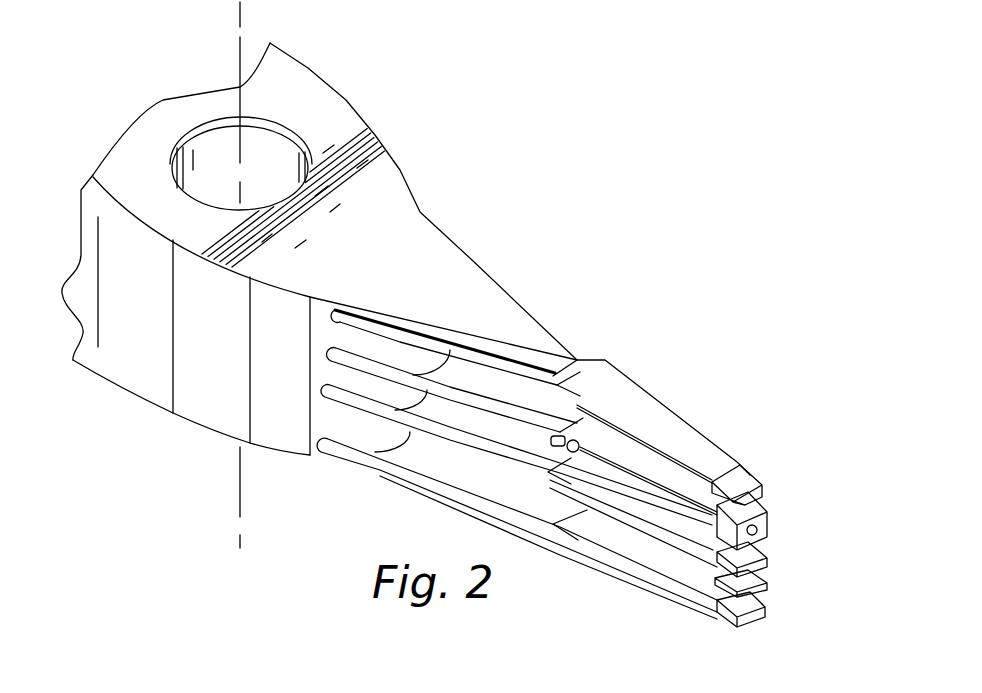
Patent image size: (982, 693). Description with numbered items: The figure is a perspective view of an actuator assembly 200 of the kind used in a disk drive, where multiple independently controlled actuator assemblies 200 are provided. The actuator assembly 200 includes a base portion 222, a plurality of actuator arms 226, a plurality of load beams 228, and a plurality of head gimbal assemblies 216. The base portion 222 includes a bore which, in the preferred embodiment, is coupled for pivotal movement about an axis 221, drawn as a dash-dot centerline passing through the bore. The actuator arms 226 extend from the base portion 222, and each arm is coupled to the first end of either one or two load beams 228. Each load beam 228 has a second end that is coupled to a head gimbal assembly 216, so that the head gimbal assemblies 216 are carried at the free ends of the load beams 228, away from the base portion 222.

The actuator assembly 200 is at (520, 238).
The head gimbal assembly 216 is at (768, 495).
The axis 221 is at (240, 480).
The base portion 222 is at (315, 95).
The actuator arms 226 is at (537, 500).
The load beams 228 is at (623, 500).